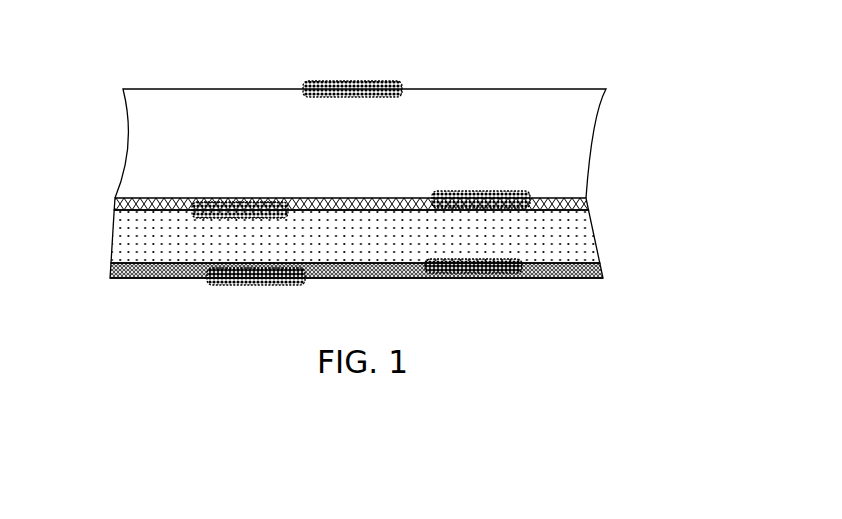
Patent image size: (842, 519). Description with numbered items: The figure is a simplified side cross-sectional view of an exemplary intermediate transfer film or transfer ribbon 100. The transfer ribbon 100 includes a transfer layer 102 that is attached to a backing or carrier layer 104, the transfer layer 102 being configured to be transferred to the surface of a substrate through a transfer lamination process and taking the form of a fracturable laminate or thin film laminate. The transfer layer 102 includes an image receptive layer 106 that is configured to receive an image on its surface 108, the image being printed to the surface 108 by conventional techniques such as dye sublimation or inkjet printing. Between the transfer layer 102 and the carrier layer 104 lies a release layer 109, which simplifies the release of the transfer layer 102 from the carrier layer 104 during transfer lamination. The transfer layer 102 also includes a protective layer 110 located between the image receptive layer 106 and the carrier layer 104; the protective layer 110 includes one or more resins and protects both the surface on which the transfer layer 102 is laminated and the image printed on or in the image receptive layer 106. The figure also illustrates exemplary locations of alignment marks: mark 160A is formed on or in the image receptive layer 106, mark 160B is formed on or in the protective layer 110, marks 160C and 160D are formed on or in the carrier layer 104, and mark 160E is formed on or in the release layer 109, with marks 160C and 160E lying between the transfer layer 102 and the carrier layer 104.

The transfer ribbon 100 is at (598, 42).
The transfer layer 102 is at (600, 208).
The carrier layer 104 is at (597, 121).
The image receptive layer 106 is at (130, 280).
The surface 108 is at (585, 290).
The release layer 109 is at (117, 204).
The protective layer 110 is at (112, 254).
The alignment mark 160A is at (240, 285).
The alignment mark 160B is at (480, 274).
The alignment mark 160C is at (472, 190).
The alignment mark 160D is at (345, 82).
The alignment mark 160E is at (238, 200).